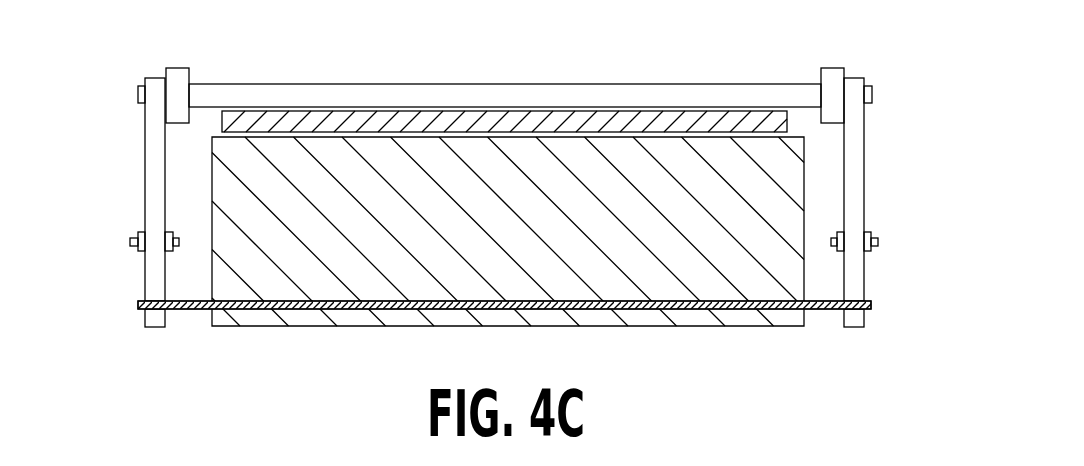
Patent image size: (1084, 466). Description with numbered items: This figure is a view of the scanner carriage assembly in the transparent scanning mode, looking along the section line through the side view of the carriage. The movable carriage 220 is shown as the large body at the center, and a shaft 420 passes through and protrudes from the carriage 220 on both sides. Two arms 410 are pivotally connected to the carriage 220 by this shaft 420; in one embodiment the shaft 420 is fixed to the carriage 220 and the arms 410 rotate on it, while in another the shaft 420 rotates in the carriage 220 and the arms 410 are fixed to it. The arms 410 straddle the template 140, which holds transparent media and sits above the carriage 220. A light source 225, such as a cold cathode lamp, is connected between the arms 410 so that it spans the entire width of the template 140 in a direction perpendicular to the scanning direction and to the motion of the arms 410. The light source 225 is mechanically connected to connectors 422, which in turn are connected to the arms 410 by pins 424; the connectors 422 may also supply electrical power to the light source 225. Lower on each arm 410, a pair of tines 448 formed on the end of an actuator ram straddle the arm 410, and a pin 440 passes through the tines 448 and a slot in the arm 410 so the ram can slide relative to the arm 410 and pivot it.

The arms 410 is at (145, 160).
The connectors 422 is at (178, 75).
The pins 424 is at (138, 92).
The light source 225 is at (588, 92).
The template 140 is at (362, 118).
The carriage 220 is at (672, 262).
The shaft 420 is at (248, 310).
The tines 448 is at (168, 232).
The pin 440 is at (130, 242).